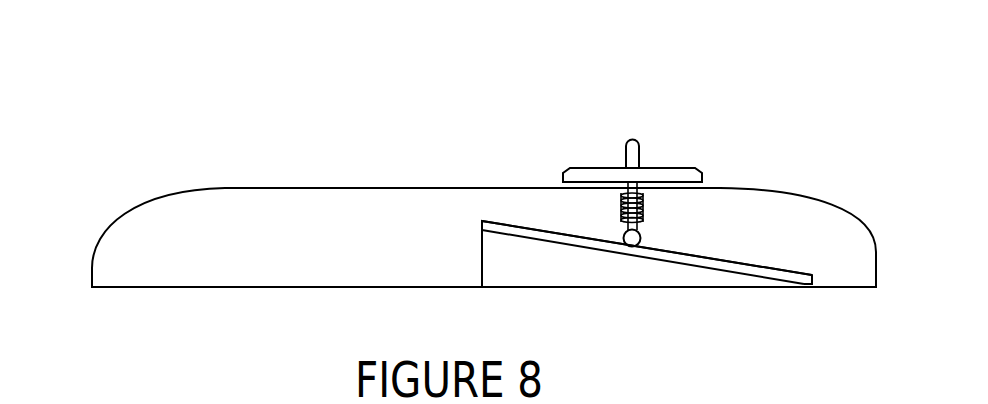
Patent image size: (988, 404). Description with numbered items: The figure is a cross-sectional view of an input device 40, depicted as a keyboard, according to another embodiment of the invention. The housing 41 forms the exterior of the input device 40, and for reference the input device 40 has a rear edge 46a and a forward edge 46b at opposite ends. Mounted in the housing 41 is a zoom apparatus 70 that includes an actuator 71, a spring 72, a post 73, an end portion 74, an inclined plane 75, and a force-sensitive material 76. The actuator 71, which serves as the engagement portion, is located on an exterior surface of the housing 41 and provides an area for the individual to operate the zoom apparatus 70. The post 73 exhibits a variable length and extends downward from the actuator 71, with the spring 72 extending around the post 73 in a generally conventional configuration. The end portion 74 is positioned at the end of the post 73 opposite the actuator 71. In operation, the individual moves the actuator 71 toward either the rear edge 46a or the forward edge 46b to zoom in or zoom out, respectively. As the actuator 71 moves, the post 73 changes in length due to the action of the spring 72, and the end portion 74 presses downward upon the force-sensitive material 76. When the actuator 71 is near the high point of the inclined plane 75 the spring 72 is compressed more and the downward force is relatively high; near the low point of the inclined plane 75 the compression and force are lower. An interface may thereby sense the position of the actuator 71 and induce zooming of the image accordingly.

The input device 40 is at (132, 128).
The housing 41 is at (223, 188).
The rear edge 46a is at (876, 262).
The forward edge 46b is at (92, 265).
The zoom apparatus 70 is at (604, 138).
The actuator 71 is at (641, 152).
The spring 72 is at (622, 200).
The post 73 is at (640, 216).
The end portion 74 is at (643, 238).
The inclined plane 75 is at (553, 243).
The force-sensitive material 76 is at (510, 221).